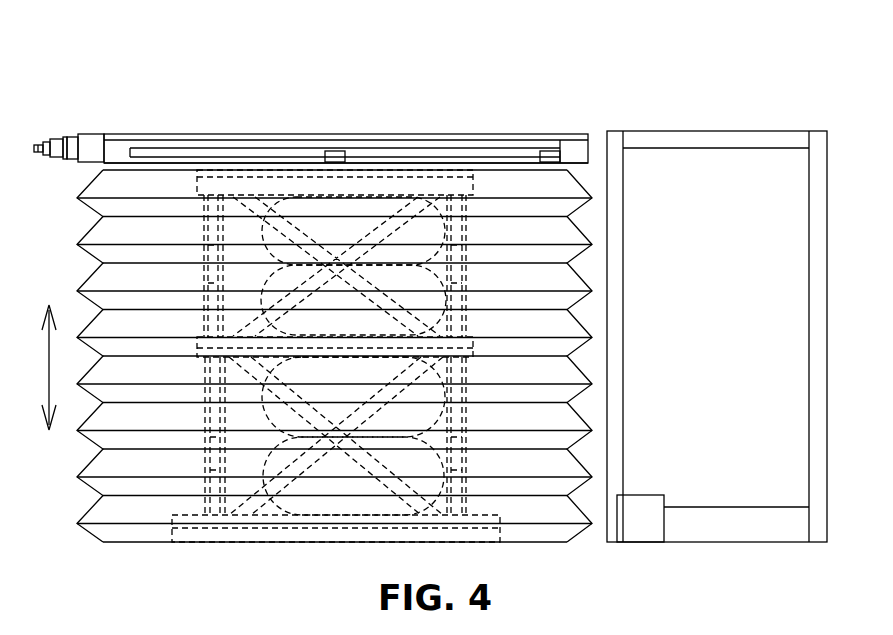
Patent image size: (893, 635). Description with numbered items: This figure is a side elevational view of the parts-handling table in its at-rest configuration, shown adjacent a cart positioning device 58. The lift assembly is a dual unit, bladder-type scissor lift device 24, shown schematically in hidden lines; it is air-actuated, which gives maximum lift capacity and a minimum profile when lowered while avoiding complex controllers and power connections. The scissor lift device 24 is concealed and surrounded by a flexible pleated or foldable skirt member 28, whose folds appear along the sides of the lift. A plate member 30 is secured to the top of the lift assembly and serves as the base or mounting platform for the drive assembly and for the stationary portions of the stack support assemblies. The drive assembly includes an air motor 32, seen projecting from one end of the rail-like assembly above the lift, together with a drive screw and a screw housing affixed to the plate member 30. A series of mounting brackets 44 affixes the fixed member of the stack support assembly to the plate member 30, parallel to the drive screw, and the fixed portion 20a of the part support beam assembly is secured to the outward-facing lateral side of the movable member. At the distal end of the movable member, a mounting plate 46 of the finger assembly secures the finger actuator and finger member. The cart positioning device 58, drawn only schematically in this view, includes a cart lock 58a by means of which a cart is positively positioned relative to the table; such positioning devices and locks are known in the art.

The fixed portion of the part support beam assembly 20a is at (191, 142).
The mounting brackets 44 is at (334, 152).
The mounting plate 46 is at (578, 150).
The air motor 32 is at (67, 157).
The scissor lift device 24 is at (480, 280).
The plate member 30 is at (565, 166).
The skirt member 28 is at (716, 327).
The cart positioning device 58 is at (726, 131).
The cart lock 58a is at (635, 532).